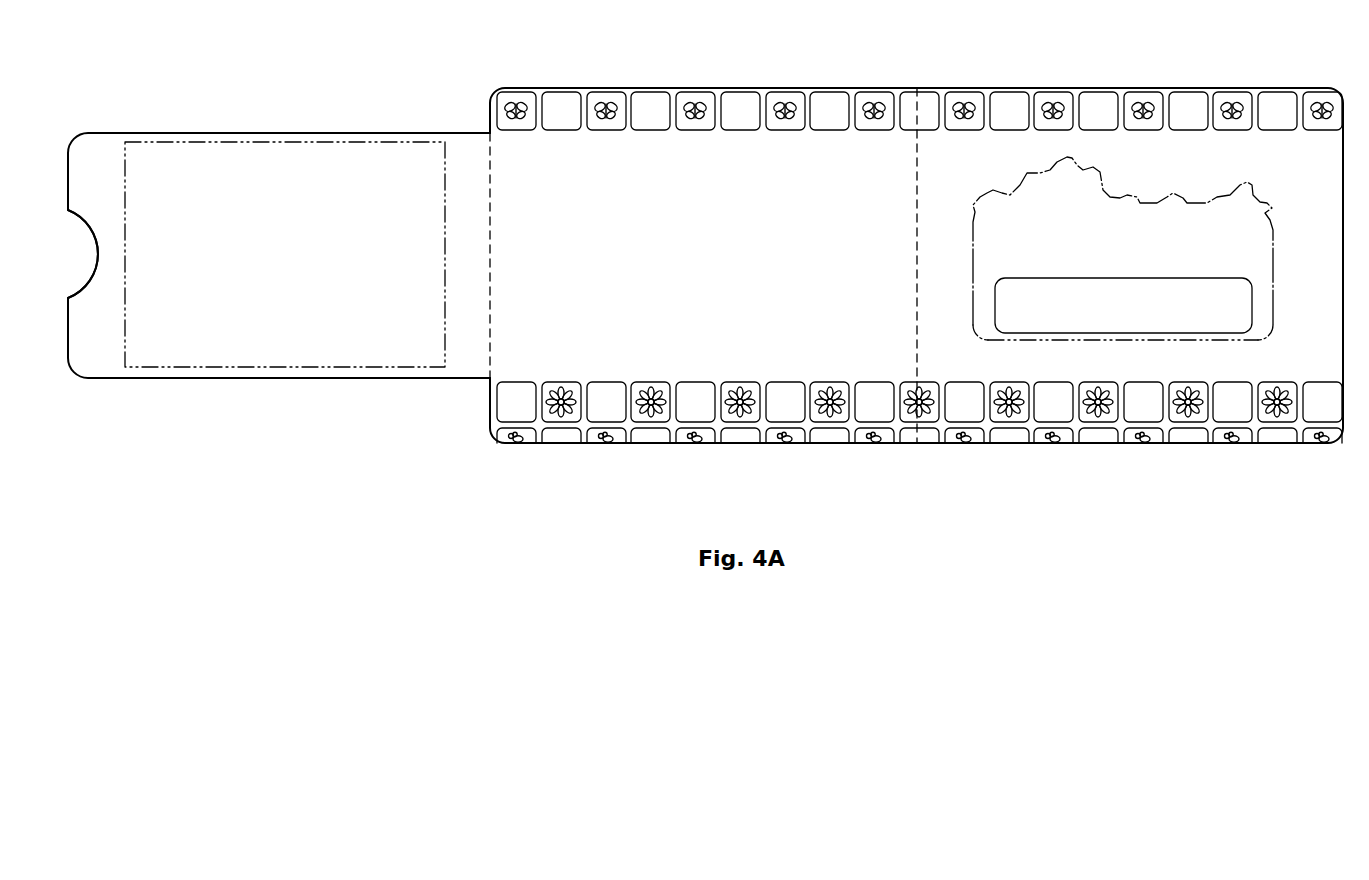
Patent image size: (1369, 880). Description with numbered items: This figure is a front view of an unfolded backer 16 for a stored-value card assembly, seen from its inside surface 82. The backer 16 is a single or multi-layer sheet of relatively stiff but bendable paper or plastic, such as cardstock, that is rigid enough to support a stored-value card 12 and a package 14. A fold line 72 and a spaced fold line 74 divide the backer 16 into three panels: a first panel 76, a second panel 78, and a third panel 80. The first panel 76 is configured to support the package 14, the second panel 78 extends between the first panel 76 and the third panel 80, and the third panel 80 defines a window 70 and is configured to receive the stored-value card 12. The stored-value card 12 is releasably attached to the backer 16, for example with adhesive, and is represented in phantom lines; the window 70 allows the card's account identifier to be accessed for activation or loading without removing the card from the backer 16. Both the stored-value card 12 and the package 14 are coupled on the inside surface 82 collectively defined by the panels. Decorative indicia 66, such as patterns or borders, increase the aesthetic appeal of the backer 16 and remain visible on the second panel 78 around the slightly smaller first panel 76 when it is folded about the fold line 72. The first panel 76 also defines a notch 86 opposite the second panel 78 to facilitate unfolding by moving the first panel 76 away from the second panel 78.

The stored-value card 12 is at (1252, 343).
The package 14 is at (365, 372).
The backer 16 is at (836, 86).
The decorative indicia 66 is at (703, 378).
The window 70 is at (1248, 330).
The fold line 72 is at (490, 345).
The fold line 74 is at (917, 362).
The first panel 76 is at (255, 370).
The second panel 78 is at (603, 365).
The third panel 80 is at (975, 360).
The inside surface 82 is at (953, 183).
The notch 86 is at (98, 257).